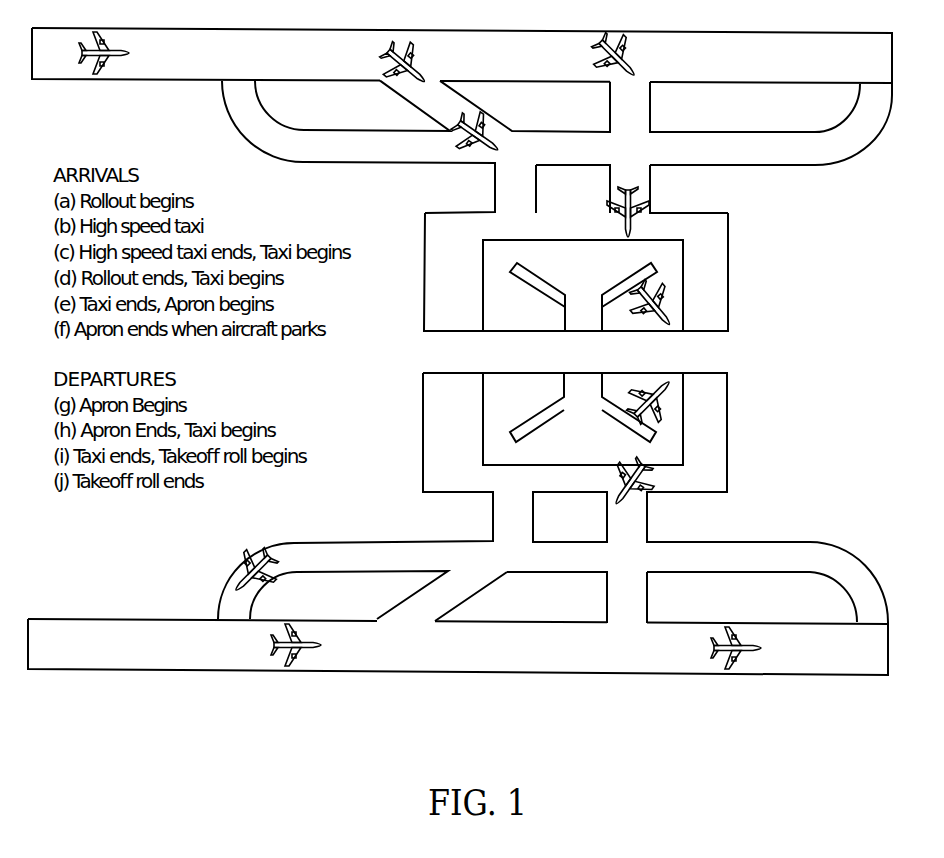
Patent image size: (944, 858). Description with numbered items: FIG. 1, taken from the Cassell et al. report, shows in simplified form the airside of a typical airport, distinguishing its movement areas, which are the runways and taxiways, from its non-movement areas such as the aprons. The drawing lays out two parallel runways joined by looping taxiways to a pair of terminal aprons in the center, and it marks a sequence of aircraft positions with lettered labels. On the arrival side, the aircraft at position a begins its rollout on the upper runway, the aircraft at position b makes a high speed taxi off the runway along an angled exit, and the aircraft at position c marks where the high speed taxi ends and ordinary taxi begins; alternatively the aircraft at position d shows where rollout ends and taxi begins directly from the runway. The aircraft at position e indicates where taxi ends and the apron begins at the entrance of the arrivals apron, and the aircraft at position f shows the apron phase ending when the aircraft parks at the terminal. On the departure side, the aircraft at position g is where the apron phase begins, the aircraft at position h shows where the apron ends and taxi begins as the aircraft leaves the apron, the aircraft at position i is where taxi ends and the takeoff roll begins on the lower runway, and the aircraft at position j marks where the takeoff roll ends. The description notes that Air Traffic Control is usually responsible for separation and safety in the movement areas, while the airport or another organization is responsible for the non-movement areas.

The aircraft at rollout begins a is at (104, 54).
The aircraft at high speed taxi b is at (406, 65).
The aircraft where high speed taxi ends and taxi begins c is at (477, 135).
The aircraft where rollout ends and taxi begins d is at (616, 57).
The aircraft where taxi ends and apron begins e is at (629, 212).
The aircraft parked at apron end f is at (653, 305).
The departing aircraft at apron begins g is at (651, 401).
The departing aircraft where apron ends and taxi begins h is at (630, 483).
The departing aircraft where taxi ends and takeoff roll begins i is at (300, 645).
The departing aircraft where takeoff roll ends j is at (740, 648).